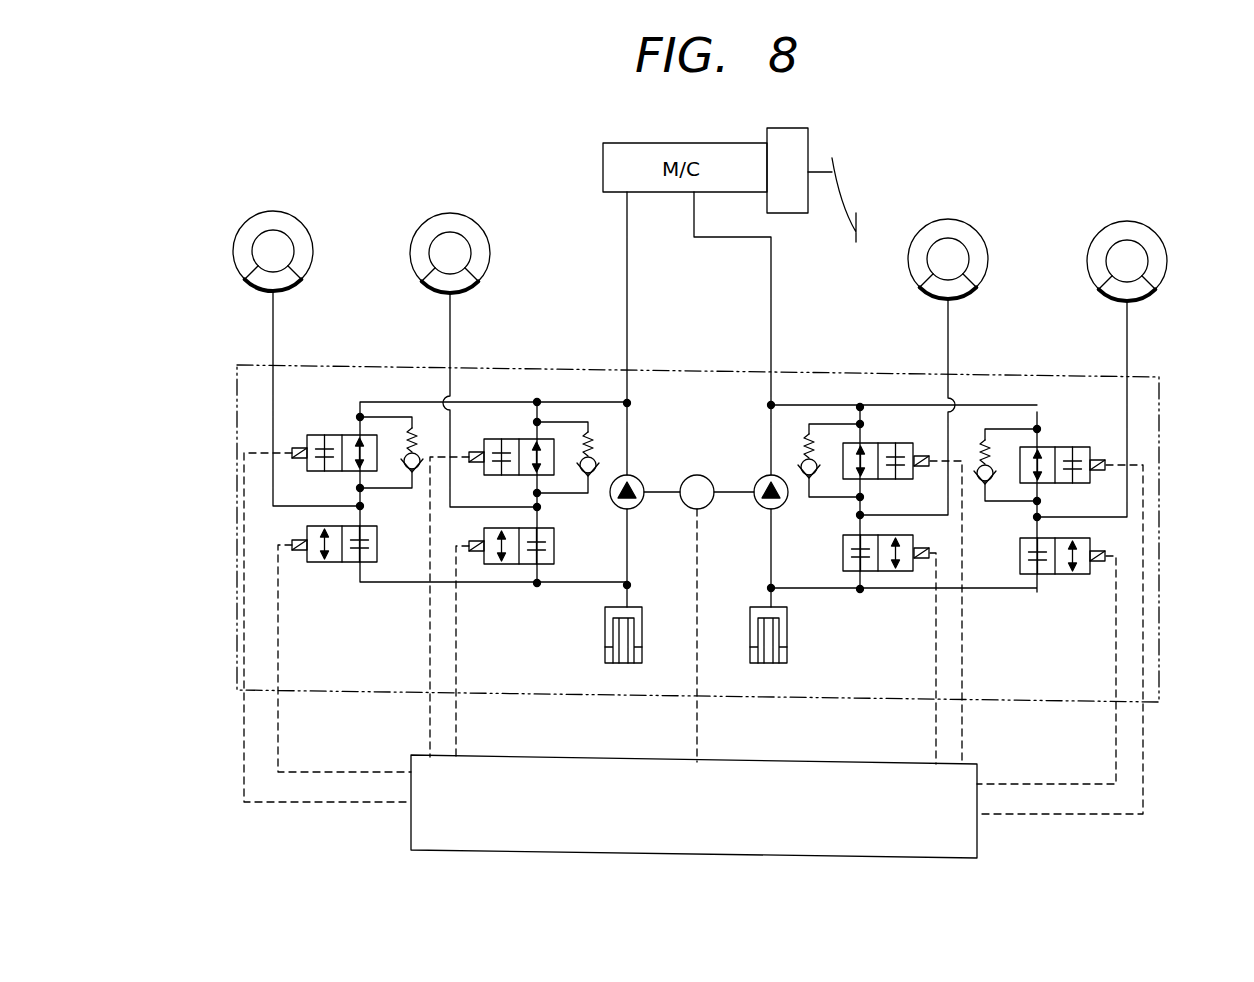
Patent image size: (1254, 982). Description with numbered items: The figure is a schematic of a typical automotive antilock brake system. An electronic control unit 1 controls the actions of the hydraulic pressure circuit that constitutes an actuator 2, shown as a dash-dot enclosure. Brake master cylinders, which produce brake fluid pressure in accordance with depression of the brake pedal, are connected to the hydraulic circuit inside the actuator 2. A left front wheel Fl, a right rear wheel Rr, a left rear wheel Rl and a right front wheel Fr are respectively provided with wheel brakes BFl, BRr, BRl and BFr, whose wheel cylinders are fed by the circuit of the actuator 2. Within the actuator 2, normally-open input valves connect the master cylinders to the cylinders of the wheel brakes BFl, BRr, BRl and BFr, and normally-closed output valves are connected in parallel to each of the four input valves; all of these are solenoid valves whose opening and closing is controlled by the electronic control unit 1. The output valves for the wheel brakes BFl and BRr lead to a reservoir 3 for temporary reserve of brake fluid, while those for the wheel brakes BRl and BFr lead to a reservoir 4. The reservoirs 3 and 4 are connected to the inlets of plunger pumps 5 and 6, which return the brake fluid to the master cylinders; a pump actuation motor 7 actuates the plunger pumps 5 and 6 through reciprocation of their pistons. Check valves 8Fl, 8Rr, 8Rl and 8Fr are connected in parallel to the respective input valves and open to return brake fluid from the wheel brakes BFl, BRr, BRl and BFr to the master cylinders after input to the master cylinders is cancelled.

The electronic control unit 1 is at (977, 828).
The actuator 2 is at (1160, 400).
The reservoir 3 is at (605, 630).
The reservoir 4 is at (787, 632).
The plunger pump 5 is at (640, 478).
The plunger pump 6 is at (757, 478).
The pump actuation motor 7 is at (697, 475).
The check valve 8Fl is at (392, 440).
The check valve 8Rr is at (582, 440).
The check valve 8Rl is at (806, 440).
The check valve 8Fr is at (982, 440).
The wheel brake BFl is at (262, 288).
The wheel brake BRr is at (440, 291).
The wheel brake BRl is at (975, 292).
The wheel brake BFr is at (1150, 295).
The left front wheel Fl is at (273, 235).
The right rear wheel Rr is at (450, 237).
The left rear wheel Rl is at (948, 243).
The right front wheel Fr is at (1127, 246).